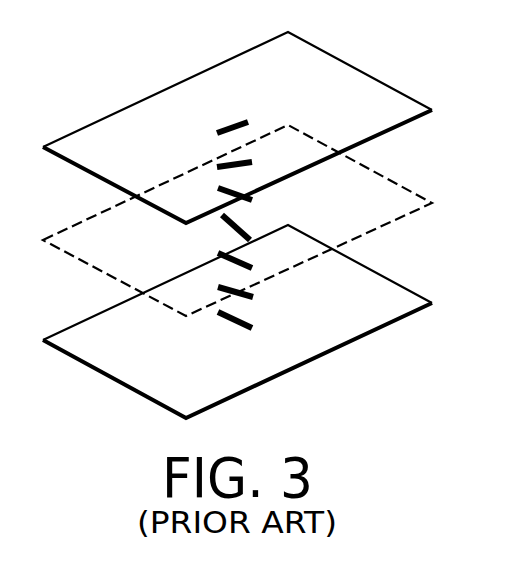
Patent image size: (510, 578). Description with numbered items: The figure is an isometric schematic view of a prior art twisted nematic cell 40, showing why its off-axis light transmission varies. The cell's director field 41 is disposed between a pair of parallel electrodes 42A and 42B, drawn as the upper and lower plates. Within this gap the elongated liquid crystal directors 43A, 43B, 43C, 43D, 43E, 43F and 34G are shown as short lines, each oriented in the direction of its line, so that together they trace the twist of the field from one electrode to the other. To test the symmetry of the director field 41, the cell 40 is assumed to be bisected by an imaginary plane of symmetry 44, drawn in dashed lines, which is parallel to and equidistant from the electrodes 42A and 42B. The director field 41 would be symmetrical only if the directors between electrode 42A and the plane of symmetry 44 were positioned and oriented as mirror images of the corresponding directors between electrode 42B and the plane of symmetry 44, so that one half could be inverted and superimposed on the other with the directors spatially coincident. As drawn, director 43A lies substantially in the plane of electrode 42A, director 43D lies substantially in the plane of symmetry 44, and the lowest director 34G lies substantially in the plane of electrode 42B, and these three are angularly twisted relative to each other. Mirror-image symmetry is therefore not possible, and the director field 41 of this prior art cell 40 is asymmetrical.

The twisted nematic cell 40 is at (127, 82).
The director field 41 is at (279, 208).
The electrode 42A is at (382, 100).
The electrode 42B is at (392, 298).
The liquid crystal director 43A is at (228, 127).
The liquid crystal director 43B is at (248, 156).
The liquid crystal director 43C is at (218, 191).
The liquid crystal director 43D is at (223, 222).
The liquid crystal director 43E is at (222, 254).
The liquid crystal director 43F is at (253, 297).
The magnetic bit element 34G is at (231, 327).
The plane of symmetry 44 is at (388, 196).